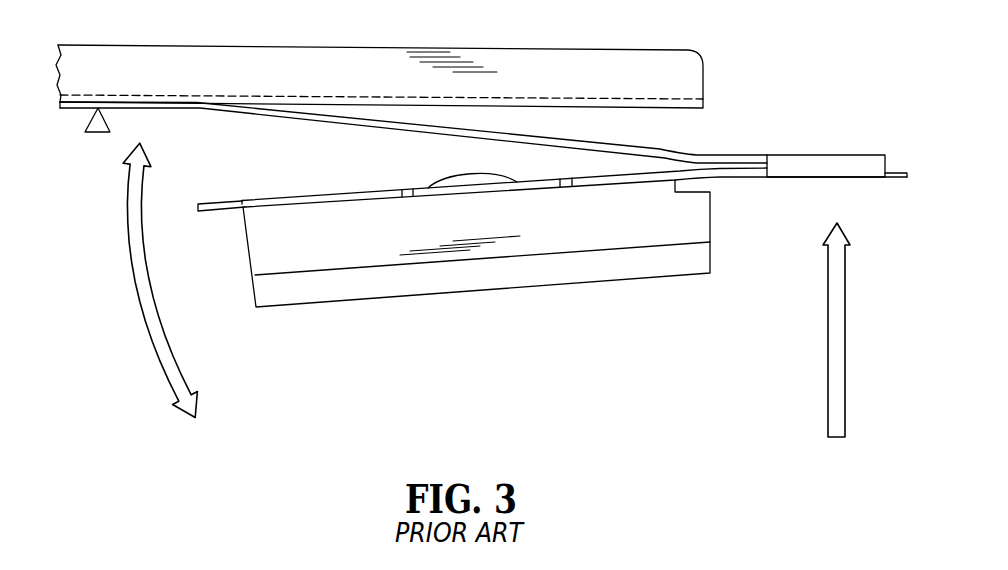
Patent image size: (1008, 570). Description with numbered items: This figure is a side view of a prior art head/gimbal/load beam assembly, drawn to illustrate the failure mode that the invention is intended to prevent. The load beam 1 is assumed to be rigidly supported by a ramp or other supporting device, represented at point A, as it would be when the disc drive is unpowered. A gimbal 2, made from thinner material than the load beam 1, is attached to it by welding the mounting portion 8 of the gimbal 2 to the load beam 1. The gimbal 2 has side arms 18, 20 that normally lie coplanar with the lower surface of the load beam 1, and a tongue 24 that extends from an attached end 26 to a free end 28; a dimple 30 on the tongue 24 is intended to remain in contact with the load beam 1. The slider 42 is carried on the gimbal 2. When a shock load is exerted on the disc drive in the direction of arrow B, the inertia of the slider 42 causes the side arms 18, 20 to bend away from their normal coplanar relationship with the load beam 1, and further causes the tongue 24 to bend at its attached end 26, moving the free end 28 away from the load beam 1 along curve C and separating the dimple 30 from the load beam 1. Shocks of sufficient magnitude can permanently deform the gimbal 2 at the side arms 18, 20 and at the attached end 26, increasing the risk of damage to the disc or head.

The load beam 1 is at (273, 42).
The gimbal 2 is at (725, 182).
The mounting portion 8 is at (157, 112).
The side arm 18 is at (413, 84).
The side arm 20 is at (482, 132).
The tongue 24 is at (755, 178).
The attached end 26 is at (803, 156).
The free end 28 is at (223, 212).
The dimple 30 is at (452, 174).
The slider 42 is at (568, 242).
The support point A is at (98, 108).
The shock load direction arrow B is at (836, 345).
The tongue deflection curve C is at (167, 297).